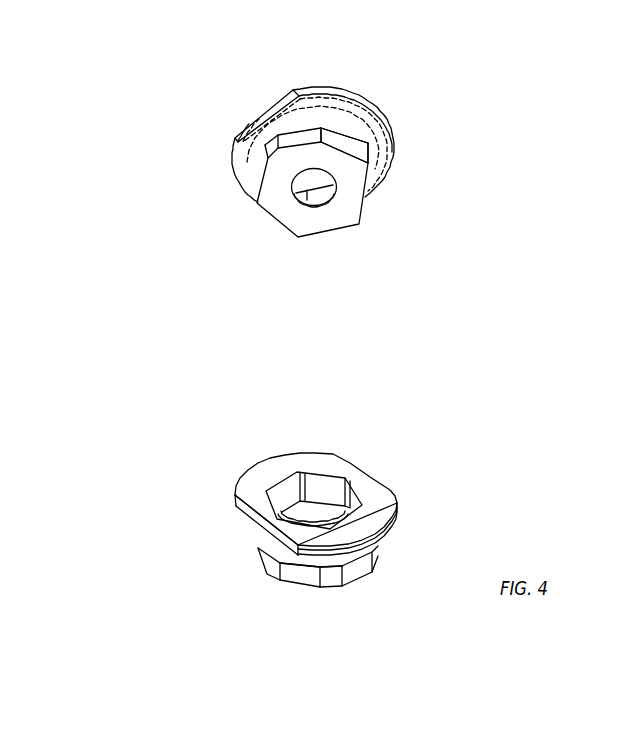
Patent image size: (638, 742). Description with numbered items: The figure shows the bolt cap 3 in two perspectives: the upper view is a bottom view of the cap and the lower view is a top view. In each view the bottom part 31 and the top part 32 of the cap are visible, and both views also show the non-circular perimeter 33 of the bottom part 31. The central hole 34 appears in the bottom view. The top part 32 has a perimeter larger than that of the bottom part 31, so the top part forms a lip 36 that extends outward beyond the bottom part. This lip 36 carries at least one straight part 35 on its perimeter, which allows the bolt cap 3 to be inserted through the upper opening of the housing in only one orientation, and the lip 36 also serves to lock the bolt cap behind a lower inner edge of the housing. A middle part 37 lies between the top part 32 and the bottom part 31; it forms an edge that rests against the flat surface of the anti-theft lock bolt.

The bolt cap 3 is at (263, 478).
The bottom part 31 is at (278, 203).
The top part of the cap 32 is at (364, 104).
The non-circular perimeter 33 is at (362, 157).
The central hole 34 is at (332, 206).
The straight part 35 is at (265, 533).
The lip 36 is at (290, 88).
The middle part 37 is at (305, 563).